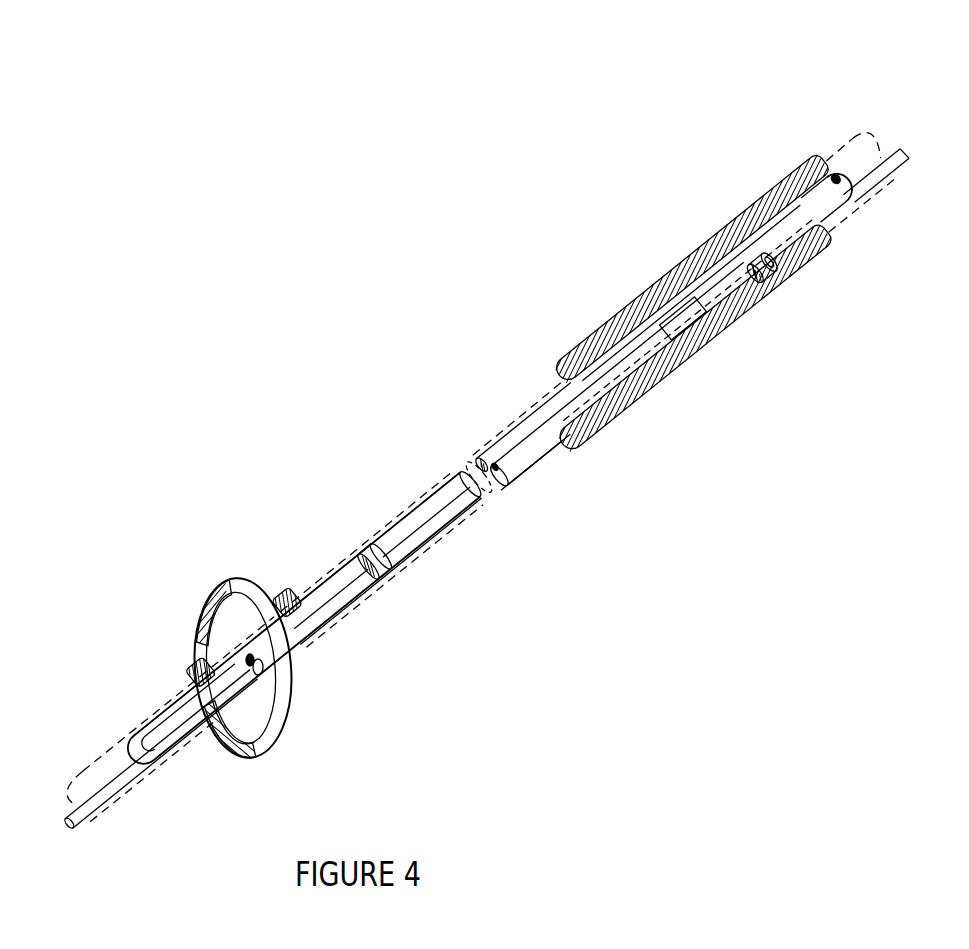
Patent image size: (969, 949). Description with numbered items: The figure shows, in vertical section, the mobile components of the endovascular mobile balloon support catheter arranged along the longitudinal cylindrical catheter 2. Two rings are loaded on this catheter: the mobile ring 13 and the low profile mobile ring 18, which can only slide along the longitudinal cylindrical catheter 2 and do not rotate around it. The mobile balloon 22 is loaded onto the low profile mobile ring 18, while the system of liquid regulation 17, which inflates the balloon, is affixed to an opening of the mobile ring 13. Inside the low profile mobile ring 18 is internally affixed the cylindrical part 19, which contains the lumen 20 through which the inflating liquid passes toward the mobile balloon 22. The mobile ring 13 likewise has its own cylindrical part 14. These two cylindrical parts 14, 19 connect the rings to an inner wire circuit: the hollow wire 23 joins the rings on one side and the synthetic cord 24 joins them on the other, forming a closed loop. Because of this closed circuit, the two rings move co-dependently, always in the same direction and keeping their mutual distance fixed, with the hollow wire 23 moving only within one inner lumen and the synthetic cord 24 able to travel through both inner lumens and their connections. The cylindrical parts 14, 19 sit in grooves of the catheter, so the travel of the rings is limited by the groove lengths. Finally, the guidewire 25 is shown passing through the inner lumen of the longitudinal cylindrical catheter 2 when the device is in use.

The longitudinal cylindrical catheter 2 is at (852, 166).
The mobile ring 13 is at (585, 347).
The cylindrical part 14 is at (703, 305).
The system of liquid regulation 17 is at (722, 268).
The low profile mobile ring 18 is at (285, 597).
The cylindrical part 19 is at (262, 672).
The lumen 20 is at (253, 660).
The mobile balloon 22 is at (223, 603).
The hollow wire 23 is at (552, 427).
The synthetic cord 24 is at (520, 425).
The guidewire 25 is at (888, 160).